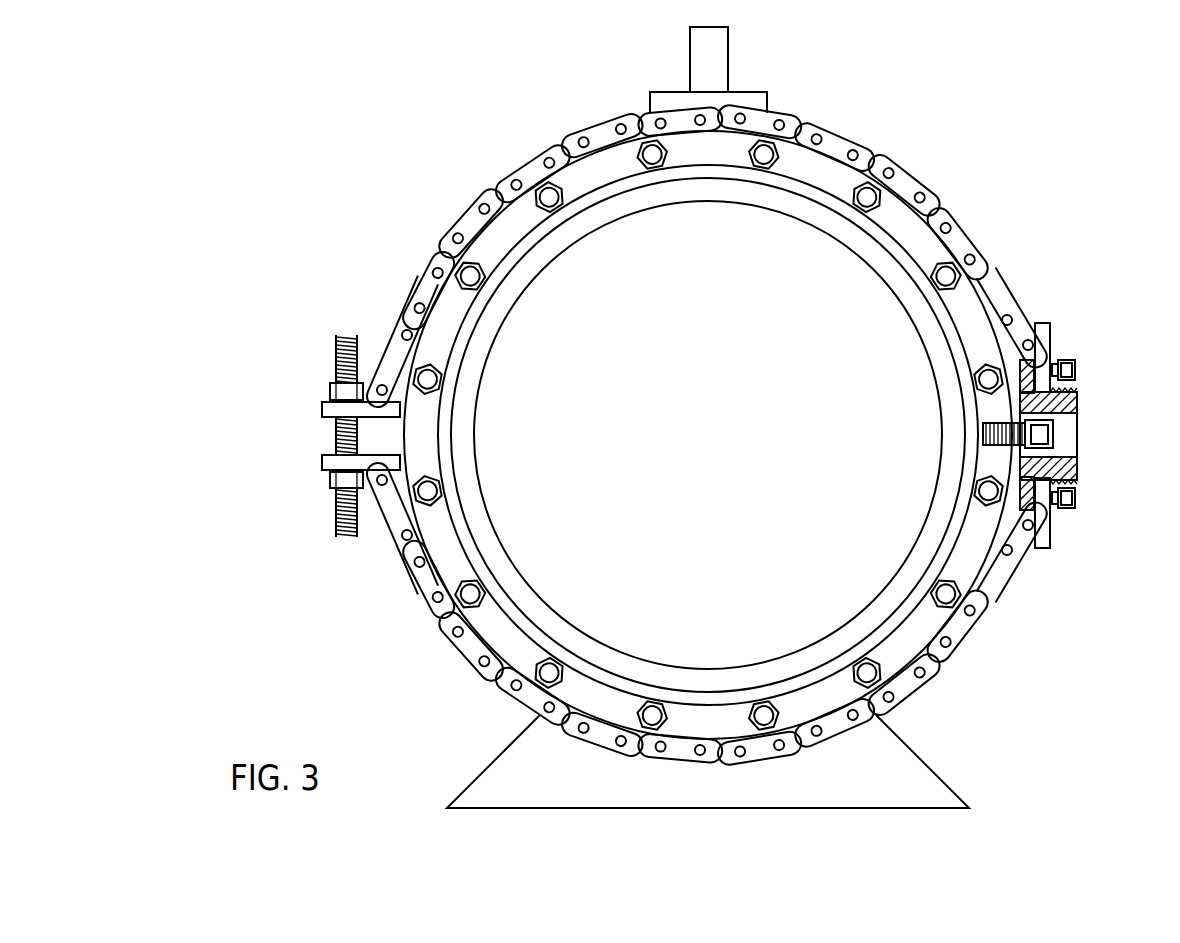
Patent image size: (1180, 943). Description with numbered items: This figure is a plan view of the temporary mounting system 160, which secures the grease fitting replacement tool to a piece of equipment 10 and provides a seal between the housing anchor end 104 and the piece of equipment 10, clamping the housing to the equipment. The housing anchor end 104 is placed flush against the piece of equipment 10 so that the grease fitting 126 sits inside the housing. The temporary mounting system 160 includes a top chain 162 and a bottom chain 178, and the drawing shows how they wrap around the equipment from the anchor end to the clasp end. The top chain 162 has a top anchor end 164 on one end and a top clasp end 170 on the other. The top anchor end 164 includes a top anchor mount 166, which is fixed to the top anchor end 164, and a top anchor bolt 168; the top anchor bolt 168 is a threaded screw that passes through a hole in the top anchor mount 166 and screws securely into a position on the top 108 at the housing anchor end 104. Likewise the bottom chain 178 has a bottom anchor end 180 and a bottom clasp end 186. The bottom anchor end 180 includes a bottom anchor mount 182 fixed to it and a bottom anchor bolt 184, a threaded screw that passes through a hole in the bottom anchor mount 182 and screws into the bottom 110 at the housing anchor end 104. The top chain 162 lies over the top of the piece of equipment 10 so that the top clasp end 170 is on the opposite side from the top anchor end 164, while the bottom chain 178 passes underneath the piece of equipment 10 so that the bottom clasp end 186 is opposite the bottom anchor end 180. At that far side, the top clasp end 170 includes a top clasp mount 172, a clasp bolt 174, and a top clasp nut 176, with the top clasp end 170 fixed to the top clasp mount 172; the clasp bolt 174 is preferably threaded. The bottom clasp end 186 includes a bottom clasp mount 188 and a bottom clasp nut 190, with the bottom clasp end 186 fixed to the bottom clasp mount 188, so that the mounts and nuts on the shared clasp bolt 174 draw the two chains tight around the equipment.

The piece of equipment 10 is at (495, 228).
The housing anchor end 104 is at (1078, 405).
The top 108 is at (1012, 362).
The bottom 110 is at (1025, 488).
The grease fitting 126 is at (1040, 437).
The temporary mounting system 160 is at (676, 417).
The top chain 162 is at (935, 207).
The top anchor end 164 is at (1020, 330).
The top anchor mount 166 is at (1048, 337).
The top anchor bolt 168 is at (1075, 371).
The top clasp end 170 is at (387, 375).
The top clasp mount 172 is at (325, 409).
The clasp bolt 174 is at (345, 333).
The top clasp nut 176 is at (347, 393).
The bottom chain 178 is at (990, 605).
The bottom anchor end 180 is at (1015, 540).
The bottom anchor mount 182 is at (1048, 531).
The bottom anchor bolt 184 is at (1075, 497).
The bottom clasp end 186 is at (390, 515).
The bottom clasp mount 188 is at (325, 463).
The bottom clasp nut 190 is at (347, 479).